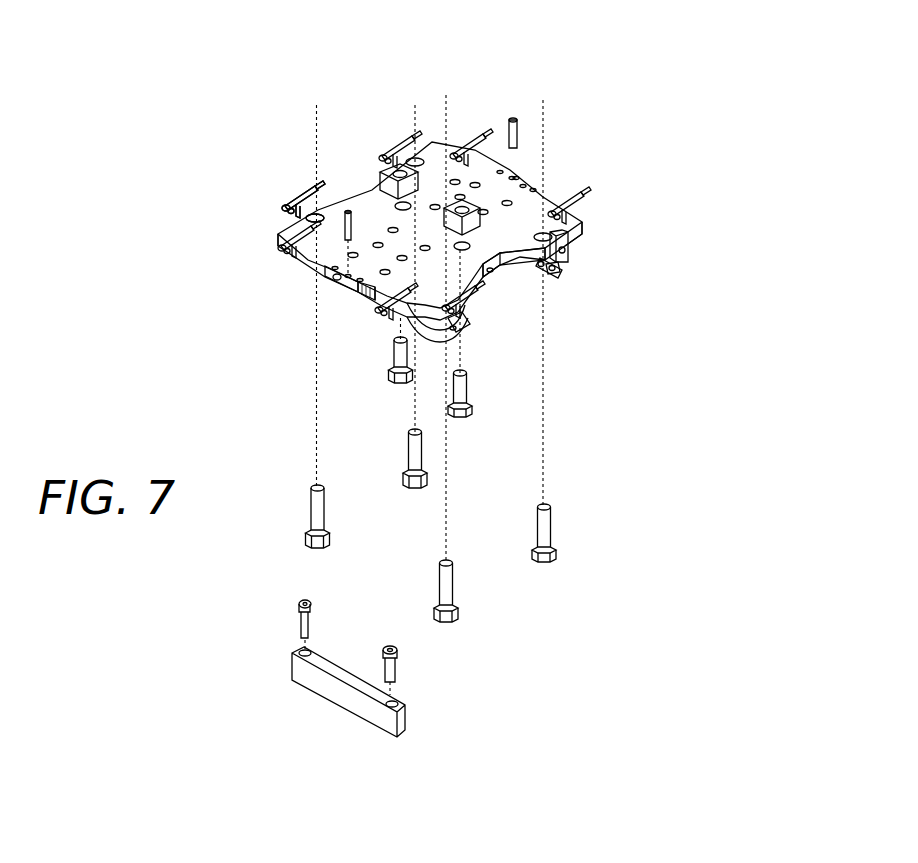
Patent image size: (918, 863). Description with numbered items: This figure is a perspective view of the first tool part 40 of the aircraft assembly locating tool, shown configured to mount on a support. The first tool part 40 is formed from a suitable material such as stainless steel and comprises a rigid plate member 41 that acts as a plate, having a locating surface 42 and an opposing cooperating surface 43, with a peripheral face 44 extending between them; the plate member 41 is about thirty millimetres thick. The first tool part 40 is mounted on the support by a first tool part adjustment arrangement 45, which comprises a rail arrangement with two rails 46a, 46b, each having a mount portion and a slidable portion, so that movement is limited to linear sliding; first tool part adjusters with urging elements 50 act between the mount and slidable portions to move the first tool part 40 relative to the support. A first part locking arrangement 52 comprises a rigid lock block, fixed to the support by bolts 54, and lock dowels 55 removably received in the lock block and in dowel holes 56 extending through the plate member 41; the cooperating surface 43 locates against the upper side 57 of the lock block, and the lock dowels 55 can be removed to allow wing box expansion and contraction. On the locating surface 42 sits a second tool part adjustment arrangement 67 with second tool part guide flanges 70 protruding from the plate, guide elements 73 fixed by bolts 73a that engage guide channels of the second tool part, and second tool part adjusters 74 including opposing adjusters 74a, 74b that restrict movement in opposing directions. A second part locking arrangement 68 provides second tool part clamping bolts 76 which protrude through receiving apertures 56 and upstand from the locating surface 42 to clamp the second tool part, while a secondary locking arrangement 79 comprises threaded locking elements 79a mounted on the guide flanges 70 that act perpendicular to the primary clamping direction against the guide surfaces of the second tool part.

The first tool part 40 is at (672, 44).
The rigid plate member 41 is at (430, 142).
The locating surface 42 is at (583, 223).
The cooperating surface 43 is at (572, 244).
The peripheral face 44 is at (342, 282).
The first tool part adjustment arrangement 45 is at (502, 277).
The rail 46a is at (450, 325).
The rail 46b is at (530, 282).
The urging elements 50 is at (560, 270).
The first part locking arrangement 52 is at (458, 712).
The bolts 54 is at (398, 658).
The lock dowels 55 is at (513, 117).
The dowel holes 56 is at (322, 214).
The upper side 57 is at (340, 680).
The second tool part adjustment arrangement 67 is at (282, 232).
The second part locking arrangement 68 is at (545, 525).
The second tool part guide flanges 70 is at (298, 202).
The guide element 73 is at (382, 172).
The bolts 73a is at (462, 380).
The second tool part adjusters 74 is at (466, 134).
The second tool part adjuster 74a is at (286, 244).
The second tool part adjuster 74b is at (582, 198).
The second tool part clamping bolts 76 is at (318, 513).
The secondary locking arrangement 79 is at (298, 198).
The locking elements 79a is at (390, 140).